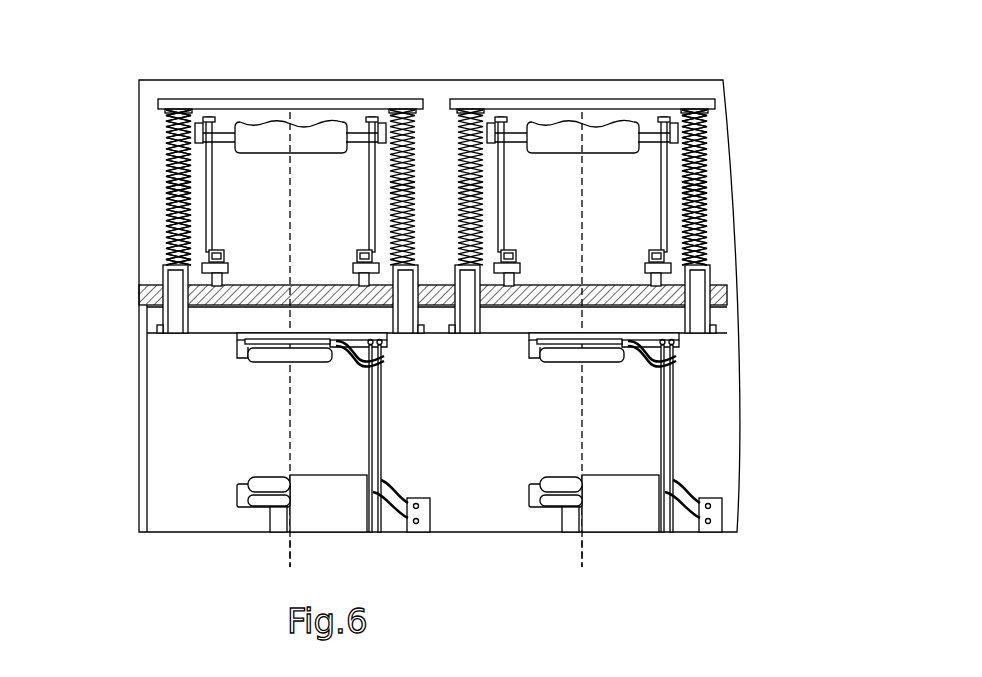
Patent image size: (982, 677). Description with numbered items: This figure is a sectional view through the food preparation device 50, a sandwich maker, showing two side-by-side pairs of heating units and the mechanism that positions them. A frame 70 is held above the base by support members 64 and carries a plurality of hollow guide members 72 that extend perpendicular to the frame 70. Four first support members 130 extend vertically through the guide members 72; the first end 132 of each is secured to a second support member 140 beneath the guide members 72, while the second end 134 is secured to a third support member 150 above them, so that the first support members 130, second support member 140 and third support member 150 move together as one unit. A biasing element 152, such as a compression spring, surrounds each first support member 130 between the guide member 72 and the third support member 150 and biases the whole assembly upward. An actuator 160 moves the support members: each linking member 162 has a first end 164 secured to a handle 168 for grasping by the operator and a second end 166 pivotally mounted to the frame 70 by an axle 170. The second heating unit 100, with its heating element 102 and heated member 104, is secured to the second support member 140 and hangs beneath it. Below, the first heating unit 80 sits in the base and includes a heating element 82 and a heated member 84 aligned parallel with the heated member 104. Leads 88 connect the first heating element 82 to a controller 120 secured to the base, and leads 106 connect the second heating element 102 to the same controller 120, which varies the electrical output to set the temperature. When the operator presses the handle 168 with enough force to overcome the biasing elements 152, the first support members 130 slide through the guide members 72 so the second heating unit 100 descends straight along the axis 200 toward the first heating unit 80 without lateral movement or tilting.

The food preparation device 50 is at (435, 301).
The support member 64 is at (140, 473).
The frame 70 is at (270, 288).
The guide member 72 is at (165, 313).
The first heating unit 80 is at (236, 494).
The heating element 82 is at (250, 507).
The heated member 84 is at (250, 483).
The lead 88 is at (387, 492).
The second heating unit 100 is at (252, 371).
The heating element 102 is at (295, 344).
The heated member 104 is at (267, 360).
The lead 106 is at (353, 366).
The controller 120 is at (330, 510).
The first support member 130 is at (462, 177).
The first end 132 is at (177, 275).
The second end 134 is at (187, 128).
The second support member 140 is at (213, 328).
The third support member 150 is at (342, 102).
The biasing element 152 is at (168, 175).
The actuator 160 is at (310, 115).
The linking member 162 is at (370, 223).
The first end 164 is at (167, 115).
The second end 166 is at (206, 240).
The handle 168 is at (258, 126).
The axle 170 is at (205, 267).
The axis 200 is at (288, 553).